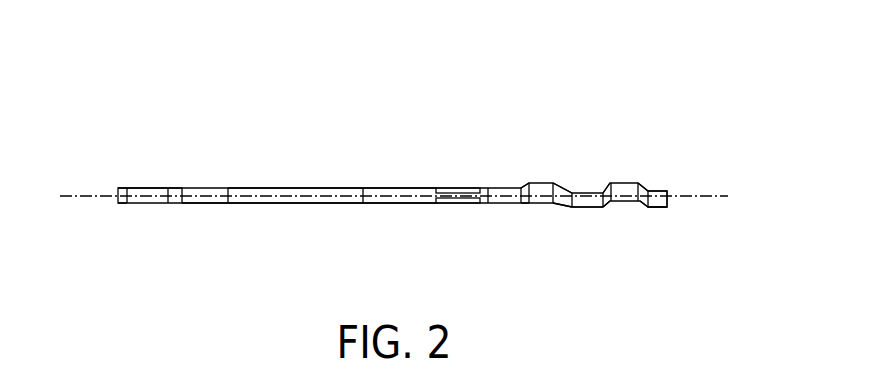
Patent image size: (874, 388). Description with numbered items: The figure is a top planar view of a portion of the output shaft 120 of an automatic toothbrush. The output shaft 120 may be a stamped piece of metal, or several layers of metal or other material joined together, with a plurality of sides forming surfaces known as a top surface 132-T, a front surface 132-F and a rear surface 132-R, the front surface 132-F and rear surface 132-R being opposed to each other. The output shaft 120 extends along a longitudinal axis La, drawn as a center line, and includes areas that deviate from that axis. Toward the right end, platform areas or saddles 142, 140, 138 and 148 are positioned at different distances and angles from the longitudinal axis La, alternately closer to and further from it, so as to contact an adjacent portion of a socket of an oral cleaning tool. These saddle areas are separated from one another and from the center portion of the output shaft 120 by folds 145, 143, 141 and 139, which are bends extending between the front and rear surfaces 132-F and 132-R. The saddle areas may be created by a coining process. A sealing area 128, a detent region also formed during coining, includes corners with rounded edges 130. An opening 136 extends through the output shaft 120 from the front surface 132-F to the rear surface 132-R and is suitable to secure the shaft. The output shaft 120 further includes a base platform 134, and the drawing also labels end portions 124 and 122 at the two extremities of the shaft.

The output shaft 120 is at (108, 84).
The longitudinal axis La is at (88, 195).
The distal end portion 122 is at (668, 200).
The proximal end portion 124 is at (120, 204).
The sealing area 128 is at (476, 202).
The rounded edges 130 is at (433, 178).
The top surface 132-T is at (253, 204).
The rear surface 132-R is at (392, 187).
The front surface 132-F is at (392, 204).
The base platform 134 is at (565, 193).
The opening 136 is at (151, 188).
The saddle area 138 is at (625, 183).
The fold 139 is at (643, 208).
The saddle area 140 is at (588, 209).
The fold 141 is at (608, 208).
The saddle area 142 is at (540, 183).
The fold 143 is at (558, 208).
The fold 145 is at (523, 204).
The saddle area 148 is at (653, 208).